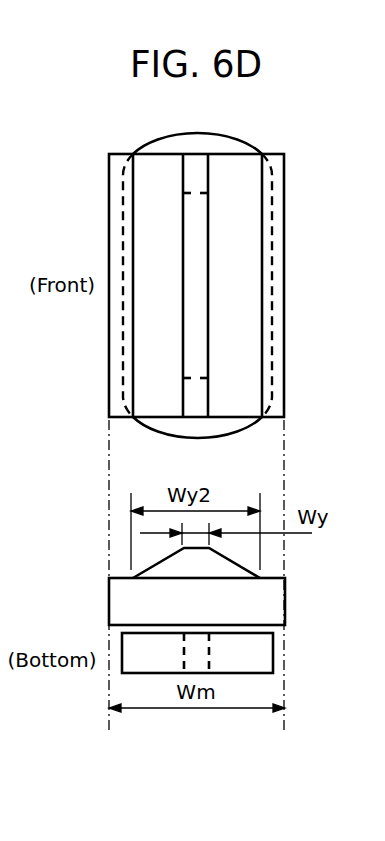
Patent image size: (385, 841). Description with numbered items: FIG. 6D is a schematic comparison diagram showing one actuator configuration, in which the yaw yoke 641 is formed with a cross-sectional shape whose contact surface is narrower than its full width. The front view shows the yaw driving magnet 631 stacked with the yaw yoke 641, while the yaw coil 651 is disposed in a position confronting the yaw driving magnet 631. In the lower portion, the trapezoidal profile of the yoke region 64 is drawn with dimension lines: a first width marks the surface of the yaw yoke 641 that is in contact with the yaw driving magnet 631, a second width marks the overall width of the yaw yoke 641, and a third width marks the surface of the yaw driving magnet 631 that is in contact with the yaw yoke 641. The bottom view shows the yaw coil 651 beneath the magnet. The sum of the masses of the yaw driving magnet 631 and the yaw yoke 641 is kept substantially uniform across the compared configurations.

The yaw driving magnet 631 is at (122, 403).
The yaw yoke 641 is at (196, 406).
The yaw coil 651 is at (228, 422).
The trapezoidal projection 64 is at (233, 567).